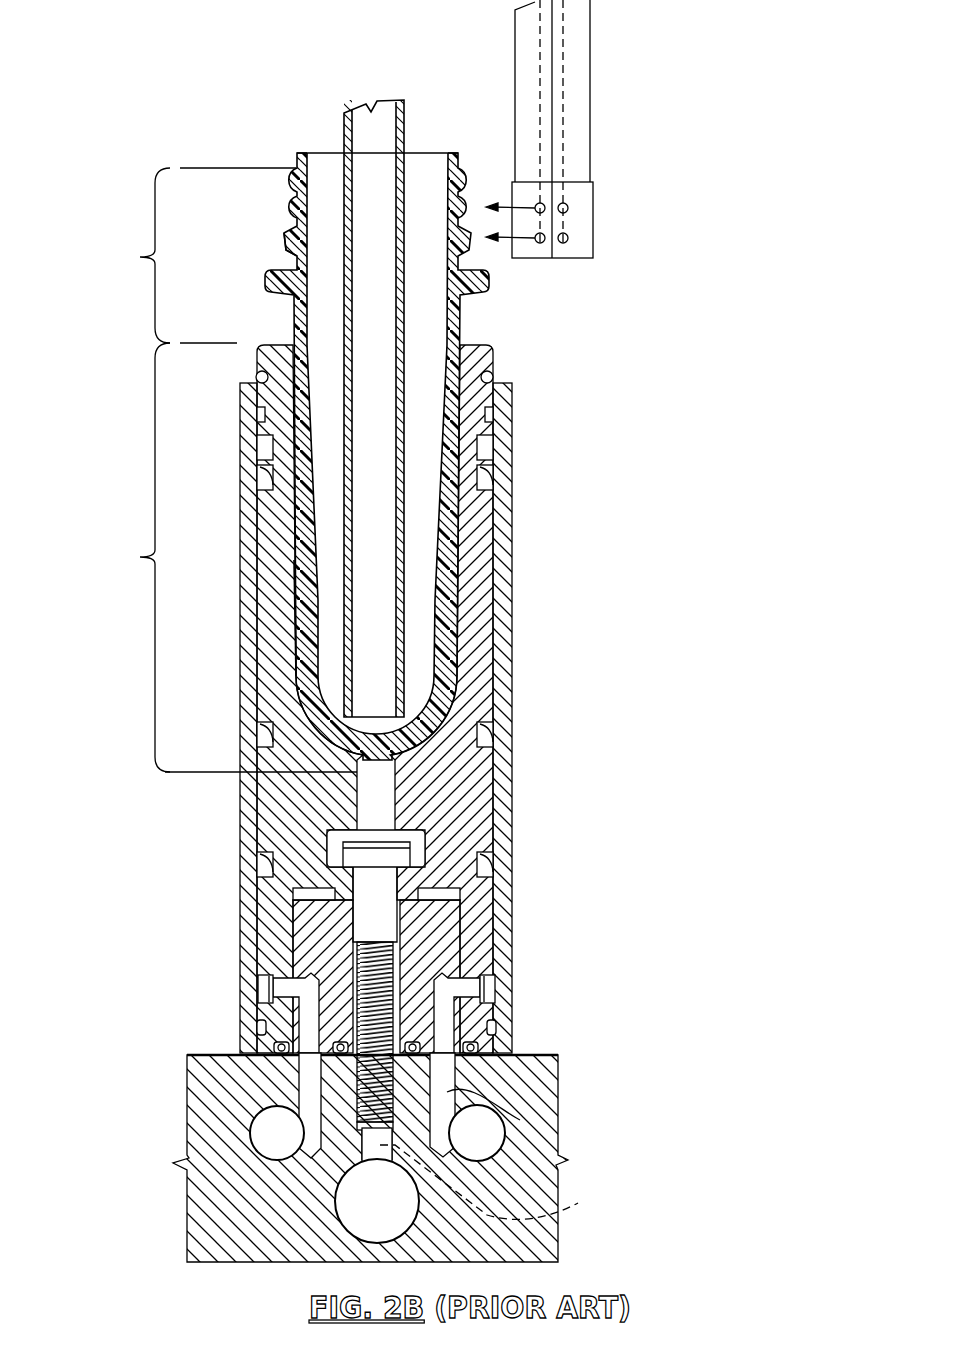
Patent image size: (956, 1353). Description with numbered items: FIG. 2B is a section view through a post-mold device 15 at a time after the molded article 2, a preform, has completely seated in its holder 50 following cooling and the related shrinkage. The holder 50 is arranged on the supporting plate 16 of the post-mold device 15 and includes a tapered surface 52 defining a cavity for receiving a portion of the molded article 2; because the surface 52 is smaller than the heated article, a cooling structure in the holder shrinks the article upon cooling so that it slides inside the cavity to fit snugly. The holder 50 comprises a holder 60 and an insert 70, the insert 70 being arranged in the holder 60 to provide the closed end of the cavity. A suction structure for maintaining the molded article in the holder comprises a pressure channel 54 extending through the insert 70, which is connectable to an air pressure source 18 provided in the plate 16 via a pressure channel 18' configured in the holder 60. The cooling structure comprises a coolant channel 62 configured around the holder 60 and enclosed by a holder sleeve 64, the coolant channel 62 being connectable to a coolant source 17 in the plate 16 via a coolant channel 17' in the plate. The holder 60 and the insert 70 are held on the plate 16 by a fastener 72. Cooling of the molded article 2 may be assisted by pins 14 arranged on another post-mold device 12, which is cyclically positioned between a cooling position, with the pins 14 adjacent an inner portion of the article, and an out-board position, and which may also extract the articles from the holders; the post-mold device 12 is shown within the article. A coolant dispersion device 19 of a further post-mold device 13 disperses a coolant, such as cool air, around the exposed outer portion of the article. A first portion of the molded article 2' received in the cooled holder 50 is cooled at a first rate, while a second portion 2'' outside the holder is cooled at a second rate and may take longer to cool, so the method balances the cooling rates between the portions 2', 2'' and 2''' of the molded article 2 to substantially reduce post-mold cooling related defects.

The molded article 2 is at (352, 460).
The first portion of the molded article 2' is at (228, 557).
The second portion of the molded article 2'' is at (196, 255).
The portion of the molded article 2''' is at (377, 189).
The post-mold device 12 is at (321, 395).
The post-mold device 13 is at (612, 129).
The pin 14 is at (300, 240).
The post-mold device 15 is at (340, 784).
The supporting plate 16 is at (406, 1157).
The coolant source 17 is at (477, 1133).
The coolant channel 17' is at (537, 1114).
The air pressure source 18 is at (377, 1201).
The pressure channel 18' is at (499, 1182).
The coolant dispersion device 19 is at (578, 235).
The holder 50 is at (433, 733).
The tapered surface 52 is at (342, 618).
The pressure channel 54 is at (377, 815).
The holder 60 is at (437, 699).
The coolant channel 62 is at (485, 990).
The holder sleeve 64 is at (500, 507).
The insert 70 is at (443, 788).
The fastener 72 is at (390, 922).